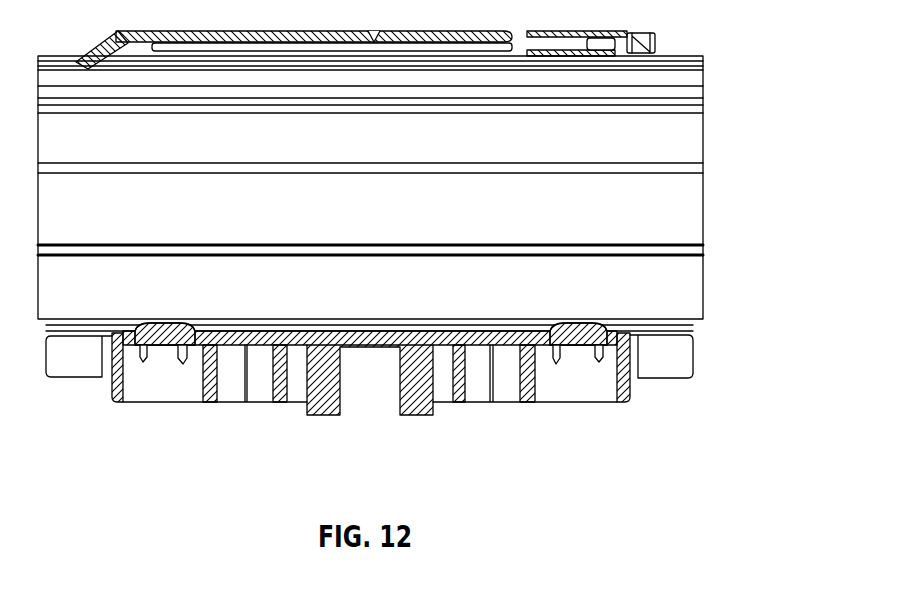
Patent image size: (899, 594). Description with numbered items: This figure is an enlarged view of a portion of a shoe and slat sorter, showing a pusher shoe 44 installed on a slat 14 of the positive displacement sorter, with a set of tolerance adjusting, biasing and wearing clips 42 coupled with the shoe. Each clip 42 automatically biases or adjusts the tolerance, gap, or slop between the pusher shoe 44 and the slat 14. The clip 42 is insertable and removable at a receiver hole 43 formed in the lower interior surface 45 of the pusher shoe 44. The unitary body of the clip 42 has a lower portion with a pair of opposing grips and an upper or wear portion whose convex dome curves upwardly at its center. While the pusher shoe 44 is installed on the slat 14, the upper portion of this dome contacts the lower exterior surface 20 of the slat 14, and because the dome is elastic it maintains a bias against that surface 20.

The slat 14 is at (704, 177).
The lower exterior surface 20 is at (456, 333).
The clip 42 is at (558, 352).
The receiver hole 43 is at (107, 345).
The pusher shoe 44 is at (652, 38).
The lower interior surface 45 is at (285, 316).